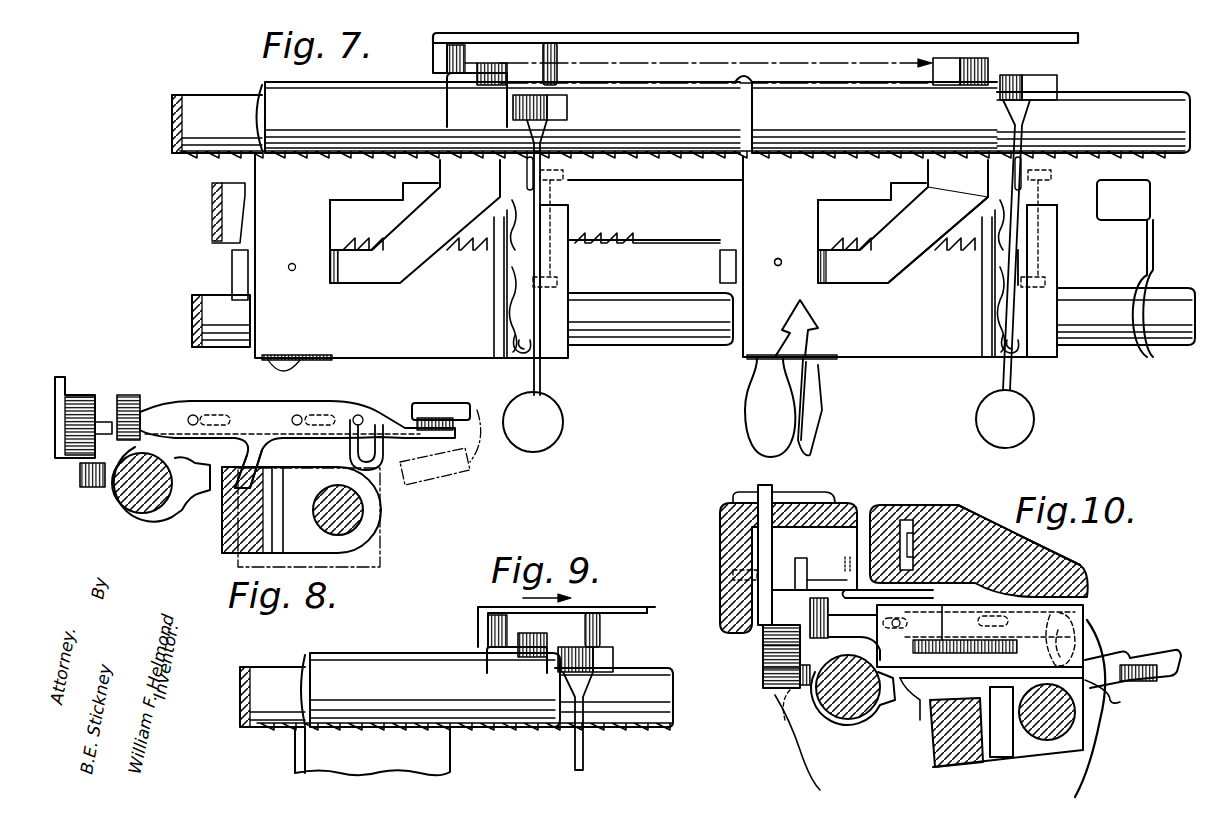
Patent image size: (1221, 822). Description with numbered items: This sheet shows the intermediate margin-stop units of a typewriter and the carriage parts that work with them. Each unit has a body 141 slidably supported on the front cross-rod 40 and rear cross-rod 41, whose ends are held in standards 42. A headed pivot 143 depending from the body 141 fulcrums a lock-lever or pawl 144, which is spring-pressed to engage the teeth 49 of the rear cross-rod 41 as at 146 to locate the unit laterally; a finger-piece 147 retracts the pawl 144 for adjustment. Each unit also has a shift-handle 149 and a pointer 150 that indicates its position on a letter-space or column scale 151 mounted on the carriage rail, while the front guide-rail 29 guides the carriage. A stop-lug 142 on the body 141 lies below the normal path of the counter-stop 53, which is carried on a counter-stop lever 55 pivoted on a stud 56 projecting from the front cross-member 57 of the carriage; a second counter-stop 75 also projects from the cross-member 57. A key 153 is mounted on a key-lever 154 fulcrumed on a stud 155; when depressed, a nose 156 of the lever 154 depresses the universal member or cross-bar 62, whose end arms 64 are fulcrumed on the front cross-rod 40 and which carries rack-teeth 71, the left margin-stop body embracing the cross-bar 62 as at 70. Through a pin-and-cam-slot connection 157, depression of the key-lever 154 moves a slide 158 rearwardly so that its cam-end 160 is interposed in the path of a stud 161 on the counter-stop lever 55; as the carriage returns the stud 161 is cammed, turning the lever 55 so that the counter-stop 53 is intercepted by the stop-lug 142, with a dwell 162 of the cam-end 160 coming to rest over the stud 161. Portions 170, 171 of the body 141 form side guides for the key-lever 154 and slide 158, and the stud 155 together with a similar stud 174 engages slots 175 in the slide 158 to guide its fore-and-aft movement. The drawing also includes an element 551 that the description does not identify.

In FIG. 10, the front guide-rail 29 is at (935, 505).
In FIG. 7, the front cross-rod 40 is at (673, 347).
In FIG. 8, the front cross-rod 40 is at (360, 512).
In FIG. 10, the front cross-rod 40 is at (1047, 740).
In FIG. 7, the rear cross-rod 41 is at (1125, 75).
In FIG. 8, the rear cross-rod 41 is at (120, 500).
In FIG. 9, the rear cross-rod 41 is at (650, 728).
In FIG. 10, the rear cross-rod 41 is at (848, 700).
In FIG. 10, the standards 42 is at (1100, 755).
In FIG. 7, the teeth of rear cross-rod 49 is at (1172, 160).
In FIG. 9, the teeth of rear cross-rod 49 is at (492, 730).
In FIG. 7, the counter-stop 53 is at (432, 50).
In FIG. 8, the counter-stop 53 is at (70, 392).
In FIG. 9, the counter-stop 53 is at (480, 628).
In FIG. 10, the counter-stop 53 is at (778, 690).
In FIG. 9, the counter-stop lever 55 is at (640, 614).
In FIG. 10, the counter-stop lever 55 is at (775, 547).
In FIG. 10, the pivot stud 56 is at (808, 560).
In FIG. 10, the front cross-member 57 is at (722, 515).
In FIG. 7, the cross-bar 62 is at (655, 210).
In FIG. 8, the cross-bar 62 is at (222, 552).
In FIG. 10, the cross-bar 62 is at (930, 752).
In FIG. 7, the end arms 64 is at (1152, 240).
In FIG. 10, the end arms 64 is at (1003, 758).
In FIG. 8, the embracing portion of margin-stop body 70 is at (382, 548).
In FIG. 7, the rack-teeth 71 is at (618, 245).
In FIG. 10, the counter-stop 75 is at (935, 595).
In FIG. 7, the body 141 is at (634, 263).
In FIG. 7, the stop-lug 142 is at (975, 58).
In FIG. 8, the stop-lug 142 is at (82, 484).
In FIG. 9, the stop-lug 142 is at (540, 633).
In FIG. 10, the stop-lug 142 is at (785, 727).
In FIG. 7, the headed pivot 143 is at (795, 246).
In FIG. 7, the lock-lever or pawl 144 is at (659, 221).
In FIG. 7, the pawl engagement point 146 is at (968, 150).
In FIG. 7, the finger-piece 147 is at (822, 418).
In FIG. 7, the shift-handle 149 is at (745, 408).
In FIG. 7, the pointer 150 is at (812, 328).
In FIG. 10, the letter-space or column scale 151 is at (1060, 556).
In FIG. 7, the key 153 is at (503, 420).
In FIG. 8, the key 153 is at (446, 447).
In FIG. 10, the key 153 is at (1168, 660).
In FIG. 7, the key-lever 154 is at (537, 378).
In FIG. 8, the key-lever 154 is at (408, 412).
In FIG. 10, the key-lever 154 is at (1125, 702).
In FIG. 7, the pivot stud 155 is at (553, 228).
In FIG. 8, the pivot stud 155 is at (194, 415).
In FIG. 7, the nose 156 is at (985, 200).
In FIG. 8, the nose 156 is at (260, 460).
In FIG. 10, the nose 156 is at (930, 700).
In FIG. 7, the pin-and-cam-slot connection 157 is at (1020, 326).
In FIG. 8, the pin-and-cam-slot connection 157 is at (352, 448).
In FIG. 10, the pin-and-cam-slot connection 157 is at (1087, 622).
In FIG. 7, the slide 158 is at (1022, 245).
In FIG. 8, the slide 158 is at (170, 410).
In FIG. 9, the slide 158 is at (574, 758).
In FIG. 10, the slide 158 is at (955, 686).
In FIG. 7, the cam-end 160 is at (1020, 75).
In FIG. 8, the cam-end 160 is at (143, 380).
In FIG. 9, the cam-end 160 is at (600, 650).
In FIG. 10, the cam-end 160 is at (810, 608).
In FIG. 7, the stud 161 is at (560, 56).
In FIG. 8, the stud 161 is at (105, 420).
In FIG. 9, the stud 161 is at (600, 625).
In FIG. 7, the dwell 162 is at (570, 111).
In FIG. 9, the dwell 162 is at (610, 668).
In FIG. 7, the body portion 170 is at (981, 258).
In FIG. 7, the body portion 171 is at (568, 357).
In FIG. 7, the stud 174 is at (765, 254).
In FIG. 8, the stud 174 is at (300, 414).
In FIG. 7, the slots 175 is at (1028, 270).
In FIG. 8, the slots 175 is at (228, 415).
In FIG. 7, the rail 551 is at (812, 38).